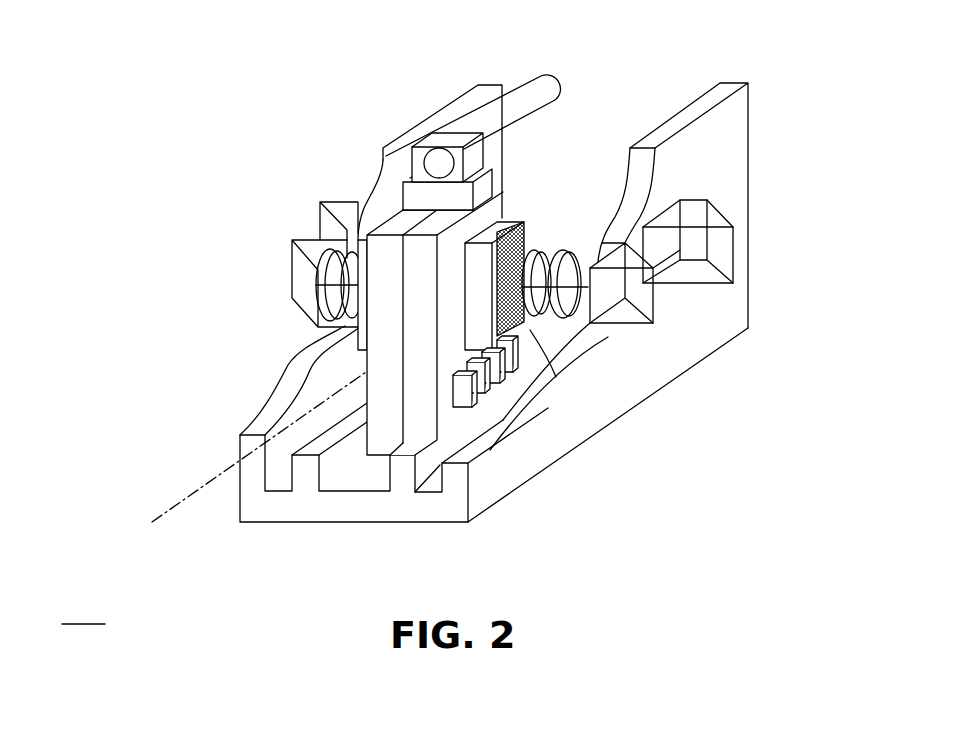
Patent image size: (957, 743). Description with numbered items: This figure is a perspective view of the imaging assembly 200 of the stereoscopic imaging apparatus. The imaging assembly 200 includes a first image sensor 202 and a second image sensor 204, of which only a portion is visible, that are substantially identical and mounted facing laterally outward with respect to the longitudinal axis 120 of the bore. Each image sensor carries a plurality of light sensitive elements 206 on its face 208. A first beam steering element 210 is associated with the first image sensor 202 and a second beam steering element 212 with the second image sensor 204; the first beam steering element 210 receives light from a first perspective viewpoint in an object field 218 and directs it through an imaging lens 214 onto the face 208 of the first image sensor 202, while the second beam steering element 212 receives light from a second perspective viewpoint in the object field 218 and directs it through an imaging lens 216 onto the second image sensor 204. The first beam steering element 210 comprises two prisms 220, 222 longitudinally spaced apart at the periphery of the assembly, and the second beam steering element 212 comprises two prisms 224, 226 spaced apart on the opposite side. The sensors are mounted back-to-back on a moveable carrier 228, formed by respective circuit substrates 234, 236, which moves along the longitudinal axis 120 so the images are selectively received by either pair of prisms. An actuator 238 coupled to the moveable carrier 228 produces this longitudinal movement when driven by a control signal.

The imaging assembly 200 is at (633, 84).
The longitudinal axis 120 is at (166, 513).
The first image sensor 202 is at (497, 227).
The second image sensor 204 is at (360, 323).
The light sensitive elements 206 is at (520, 330).
The face 208 is at (507, 240).
The first beam steering element 210 is at (693, 262).
The second beam steering element 212 is at (253, 253).
The imaging lens 214 is at (536, 250).
The imaging lens 216 is at (330, 308).
The object field 218 is at (84, 610).
The prism 220 is at (657, 302).
The prism 222 is at (706, 287).
The prism 224 is at (292, 257).
The prism 226 is at (318, 220).
The moveable carrier 228 is at (345, 321).
The circuit substrate 234 is at (402, 227).
The circuit substrate 236 is at (438, 223).
The actuator 238 is at (445, 143).